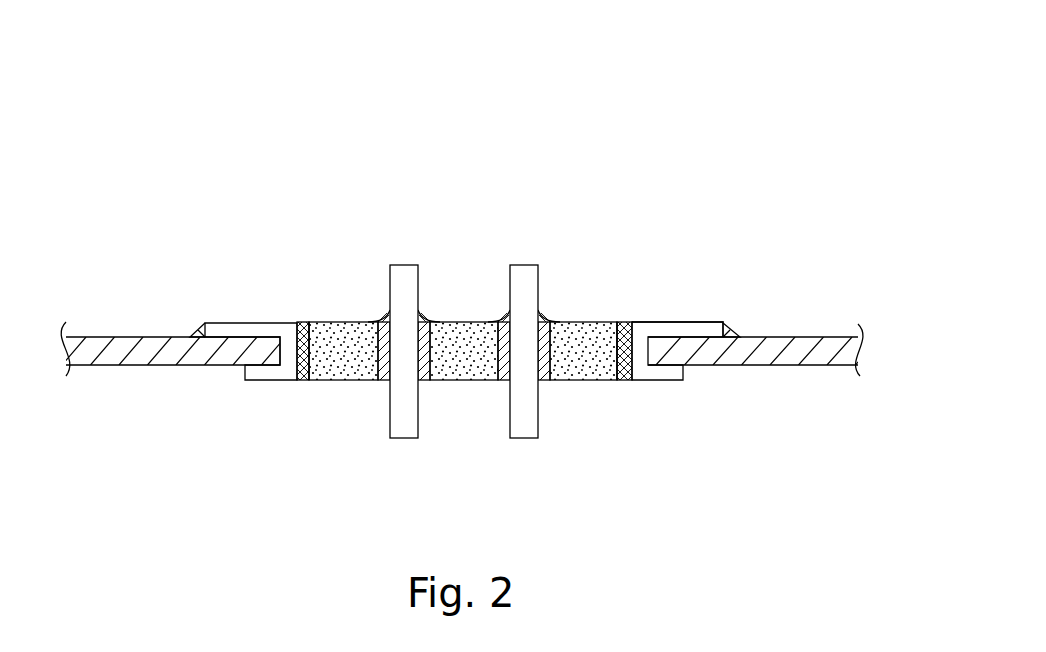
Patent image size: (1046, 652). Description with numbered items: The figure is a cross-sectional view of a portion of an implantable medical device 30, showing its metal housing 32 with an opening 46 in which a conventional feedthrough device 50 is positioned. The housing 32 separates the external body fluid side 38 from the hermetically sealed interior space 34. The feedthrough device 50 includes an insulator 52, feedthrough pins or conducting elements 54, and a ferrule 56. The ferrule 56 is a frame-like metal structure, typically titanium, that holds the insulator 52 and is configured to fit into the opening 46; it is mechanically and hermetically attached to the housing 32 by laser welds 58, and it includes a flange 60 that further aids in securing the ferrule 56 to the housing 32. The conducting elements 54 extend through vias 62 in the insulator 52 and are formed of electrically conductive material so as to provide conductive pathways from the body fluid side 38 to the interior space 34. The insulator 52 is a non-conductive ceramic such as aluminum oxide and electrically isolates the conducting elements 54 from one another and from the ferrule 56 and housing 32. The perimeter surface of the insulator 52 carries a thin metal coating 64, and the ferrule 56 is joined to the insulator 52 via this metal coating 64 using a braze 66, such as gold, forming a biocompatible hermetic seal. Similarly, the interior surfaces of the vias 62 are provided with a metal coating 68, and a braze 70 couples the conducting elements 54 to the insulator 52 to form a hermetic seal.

The medical device 30 is at (756, 67).
The metal housing 32 is at (822, 337).
The hermetically sealed interior space 34 is at (158, 474).
The body fluid side 38 is at (207, 204).
The opening 46 is at (594, 482).
The feedthrough device 50 is at (614, 190).
The insulator 52 is at (578, 322).
The conducting elements 54 is at (408, 265).
The ferrule 56 is at (675, 307).
The laser welds 58 is at (197, 334).
The flange 60 is at (698, 322).
The vias 62 is at (384, 383).
The metal coating 64 is at (307, 322).
The braze 66 is at (300, 322).
The metal coating 68 is at (498, 383).
The braze 70 is at (380, 317).